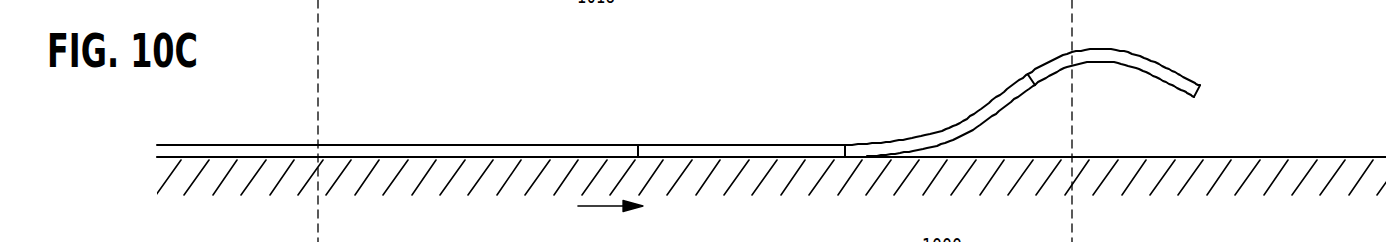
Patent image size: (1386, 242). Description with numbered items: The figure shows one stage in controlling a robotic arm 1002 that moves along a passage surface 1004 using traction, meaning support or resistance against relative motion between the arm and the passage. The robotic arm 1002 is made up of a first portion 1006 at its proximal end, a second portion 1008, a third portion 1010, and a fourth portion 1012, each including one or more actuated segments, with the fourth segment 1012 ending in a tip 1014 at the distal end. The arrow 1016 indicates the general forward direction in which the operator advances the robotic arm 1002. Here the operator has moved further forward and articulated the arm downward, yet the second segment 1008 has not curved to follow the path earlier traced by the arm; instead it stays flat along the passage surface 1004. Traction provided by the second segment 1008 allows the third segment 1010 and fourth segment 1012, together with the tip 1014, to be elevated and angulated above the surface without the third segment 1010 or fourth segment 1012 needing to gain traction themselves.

The robotic arm 1002 is at (708, 81).
The passage surface 1004 is at (1350, 157).
The first portion 1006 is at (263, 145).
The second portion 1008 is at (749, 145).
The third portion 1010 is at (908, 138).
The fourth portion 1012 is at (1109, 50).
The tip 1014 is at (1197, 92).
The arrow 1016 is at (609, 210).